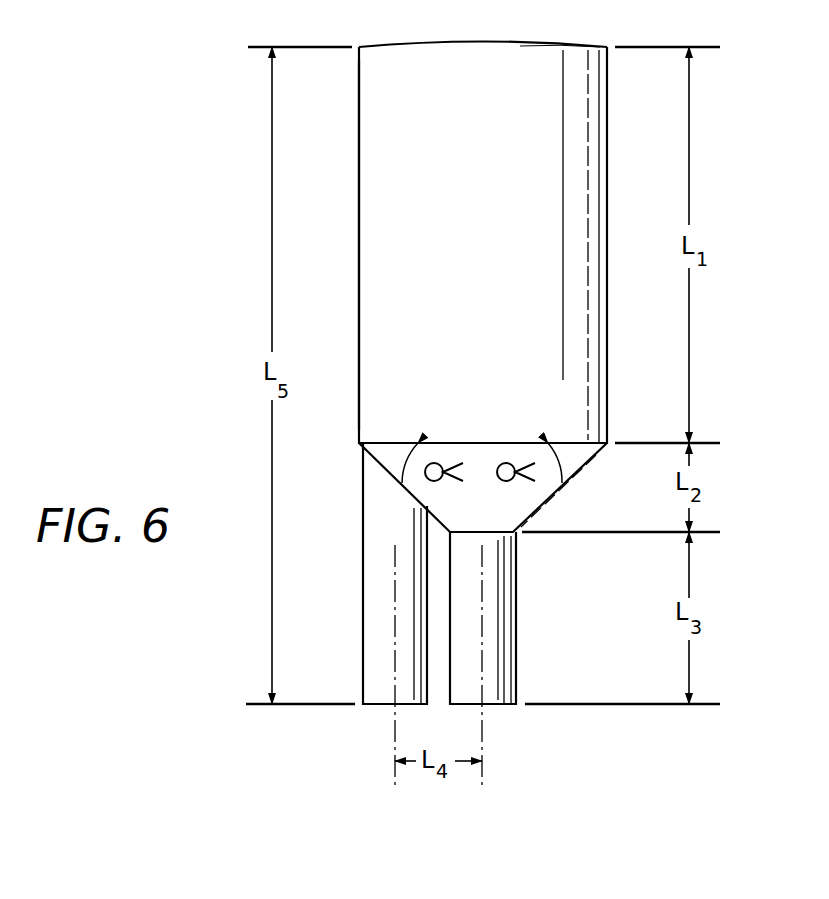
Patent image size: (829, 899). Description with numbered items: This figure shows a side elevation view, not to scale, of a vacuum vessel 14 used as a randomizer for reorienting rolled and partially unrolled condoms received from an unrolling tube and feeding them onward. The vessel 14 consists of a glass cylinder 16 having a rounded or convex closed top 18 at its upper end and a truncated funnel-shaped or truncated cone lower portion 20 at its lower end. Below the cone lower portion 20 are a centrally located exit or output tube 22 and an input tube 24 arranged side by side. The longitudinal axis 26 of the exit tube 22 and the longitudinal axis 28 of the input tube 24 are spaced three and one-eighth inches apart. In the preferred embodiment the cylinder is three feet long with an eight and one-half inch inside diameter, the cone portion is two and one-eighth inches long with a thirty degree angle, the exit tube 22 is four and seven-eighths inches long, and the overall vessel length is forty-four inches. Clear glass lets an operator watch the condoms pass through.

The vessel 14 is at (497, 316).
The glass cylinder 16 is at (357, 302).
The convex closed top 18 is at (553, 47).
The truncated cone lower portion 20 is at (540, 512).
The exit tube 22 is at (516, 616).
The input tube 24 is at (362, 631).
The longitudinal axis of exit tube 26 is at (482, 732).
The longitudinal axis of input tube 28 is at (395, 732).